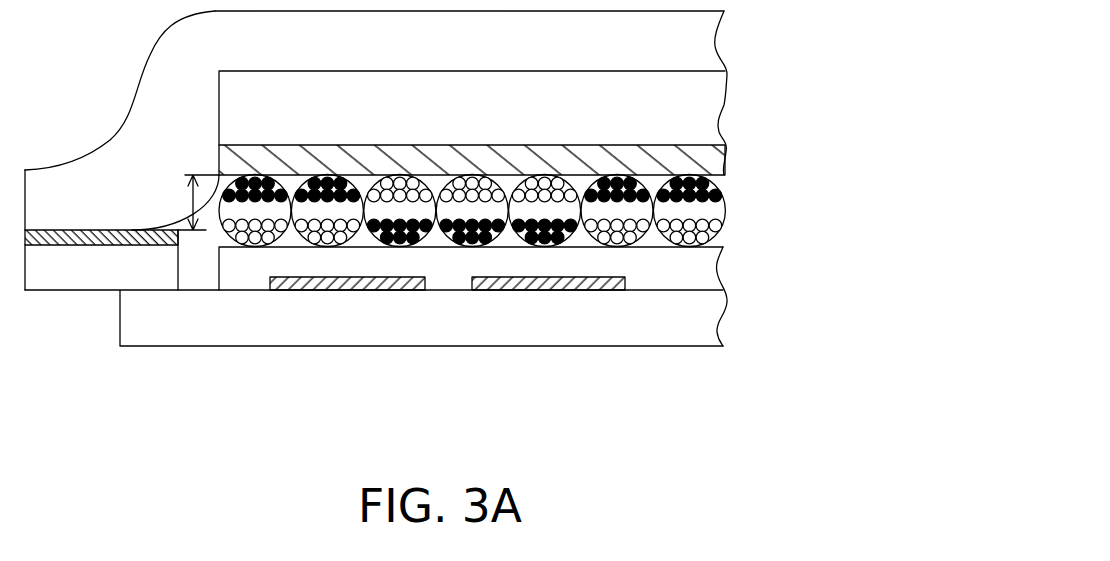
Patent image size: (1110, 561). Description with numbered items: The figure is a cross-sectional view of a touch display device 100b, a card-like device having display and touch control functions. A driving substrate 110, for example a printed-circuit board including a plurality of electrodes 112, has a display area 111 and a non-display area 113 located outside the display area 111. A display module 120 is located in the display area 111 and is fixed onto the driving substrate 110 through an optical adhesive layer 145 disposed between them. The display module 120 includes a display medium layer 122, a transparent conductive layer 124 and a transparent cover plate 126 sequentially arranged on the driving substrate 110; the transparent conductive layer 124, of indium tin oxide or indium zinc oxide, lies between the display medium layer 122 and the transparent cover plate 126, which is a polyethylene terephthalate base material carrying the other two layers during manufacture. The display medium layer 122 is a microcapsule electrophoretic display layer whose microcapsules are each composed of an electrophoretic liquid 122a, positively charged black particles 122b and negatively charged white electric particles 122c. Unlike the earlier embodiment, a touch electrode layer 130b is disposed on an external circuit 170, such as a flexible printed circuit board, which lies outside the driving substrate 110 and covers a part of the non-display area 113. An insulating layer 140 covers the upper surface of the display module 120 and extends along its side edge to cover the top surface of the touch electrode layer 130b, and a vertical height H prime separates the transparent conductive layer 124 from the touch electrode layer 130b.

The touch display device 100b is at (464, 235).
The driving substrate 110 is at (712, 318).
The display area 111 is at (471, 381).
The electrodes 112 is at (347, 290).
The non-display area 113 is at (218, 353).
The display module 120 is at (561, 168).
The display medium layer 122 is at (533, 213).
The electrophoretic liquid 122a is at (708, 210).
The positively charged black particles 122b is at (725, 190).
The negatively charged white electric particles 122c is at (720, 230).
The transparent conductive layer 124 is at (715, 158).
The transparent cover plate 126 is at (710, 125).
The touch electrode layer 130b is at (70, 230).
The insulating layer 140 is at (715, 47).
The optical adhesive layer 145 is at (707, 272).
The external circuit 170 is at (72, 275).